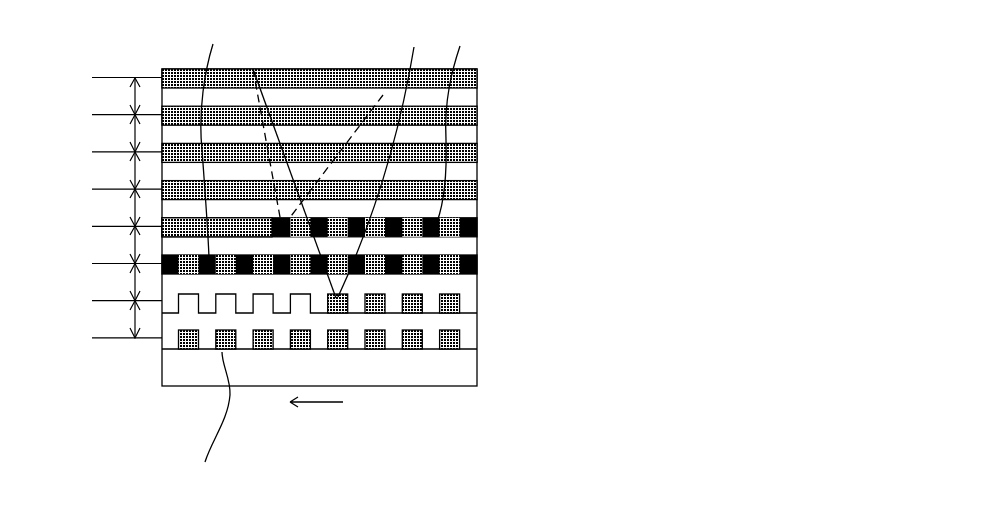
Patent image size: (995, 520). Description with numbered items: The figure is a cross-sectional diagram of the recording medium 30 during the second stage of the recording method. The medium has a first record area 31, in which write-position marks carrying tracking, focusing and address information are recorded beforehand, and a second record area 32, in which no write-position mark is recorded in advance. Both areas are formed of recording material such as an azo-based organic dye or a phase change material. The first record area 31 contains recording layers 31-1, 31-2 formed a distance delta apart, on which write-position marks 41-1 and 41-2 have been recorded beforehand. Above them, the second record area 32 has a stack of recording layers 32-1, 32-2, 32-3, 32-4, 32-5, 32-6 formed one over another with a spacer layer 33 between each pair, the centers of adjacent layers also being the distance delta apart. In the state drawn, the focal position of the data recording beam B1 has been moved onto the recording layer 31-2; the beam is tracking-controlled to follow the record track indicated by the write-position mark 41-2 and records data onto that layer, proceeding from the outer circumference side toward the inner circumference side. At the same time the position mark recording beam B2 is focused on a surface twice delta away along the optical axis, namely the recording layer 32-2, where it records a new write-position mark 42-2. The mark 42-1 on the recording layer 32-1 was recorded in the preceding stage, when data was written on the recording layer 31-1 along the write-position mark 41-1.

The recording medium 30 is at (168, 48).
The first record area 31 is at (402, 336).
The recording layer 31-1 is at (468, 340).
The recording layer 31-2 is at (468, 311).
The second record area 32 is at (402, 173).
The recording layer 32-1 is at (477, 265).
The recording layer 32-2 is at (477, 228).
The recording layer 32-3 is at (477, 191).
The recording layer 32-4 is at (477, 154).
The fifth recording layer 32-5 is at (477, 117).
The sixth recording layer 32-6 is at (477, 80).
The spacer layer 33 is at (470, 99).
The write-position mark 41-1 is at (453, 340).
The write-position mark 41-2 is at (400, 314).
The write-position mark 42-1 is at (214, 142).
The write-position mark 42-2 is at (459, 124).
The data recording beam B1 is at (337, 162).
The position mark recording beam B2 is at (383, 95).